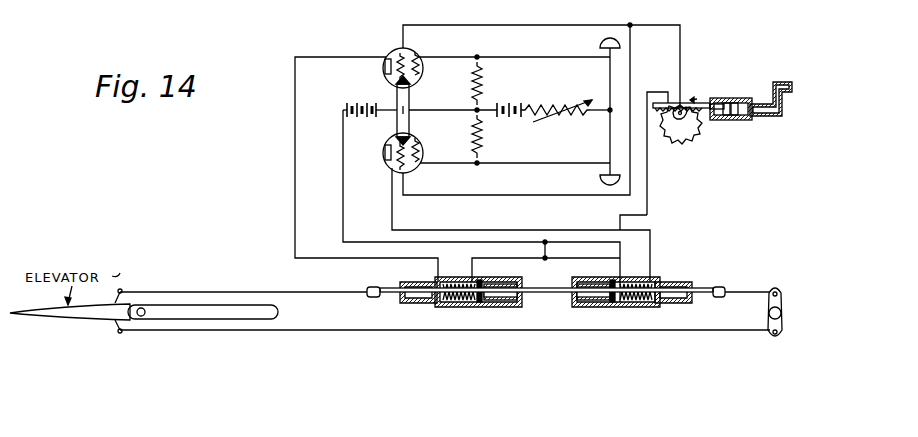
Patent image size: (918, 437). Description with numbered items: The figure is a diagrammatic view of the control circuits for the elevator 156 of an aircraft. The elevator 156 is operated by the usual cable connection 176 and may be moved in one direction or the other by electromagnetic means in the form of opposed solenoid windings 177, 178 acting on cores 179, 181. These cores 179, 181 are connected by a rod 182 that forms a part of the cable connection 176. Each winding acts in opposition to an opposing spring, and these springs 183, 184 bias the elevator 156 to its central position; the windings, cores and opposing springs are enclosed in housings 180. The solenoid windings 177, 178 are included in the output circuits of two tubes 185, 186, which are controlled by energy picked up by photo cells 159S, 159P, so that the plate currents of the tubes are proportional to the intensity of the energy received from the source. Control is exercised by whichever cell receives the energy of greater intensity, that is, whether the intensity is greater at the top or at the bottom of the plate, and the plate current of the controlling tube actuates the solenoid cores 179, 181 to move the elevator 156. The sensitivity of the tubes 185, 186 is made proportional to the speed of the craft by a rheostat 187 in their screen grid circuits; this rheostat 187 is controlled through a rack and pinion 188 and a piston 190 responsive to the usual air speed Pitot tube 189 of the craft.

The elevator 156 is at (50, 316).
The cable connection 176 is at (298, 331).
The solenoid winding 177 is at (468, 306).
The solenoid winding 178 is at (636, 306).
The core 179 is at (448, 286).
The housing 180 is at (438, 307).
The core 181 is at (645, 284).
The rod 182 is at (546, 288).
The spring 183 is at (490, 306).
The spring 184 is at (596, 306).
The tube 185 is at (392, 50).
The tube 186 is at (380, 157).
The rheostat 187 is at (684, 135).
The rack and pinion 188 is at (700, 102).
The Pitot tube 189 is at (760, 92).
The piston 190 is at (727, 120).
The photo cell 159P is at (601, 42).
The photo cell 159S is at (600, 182).